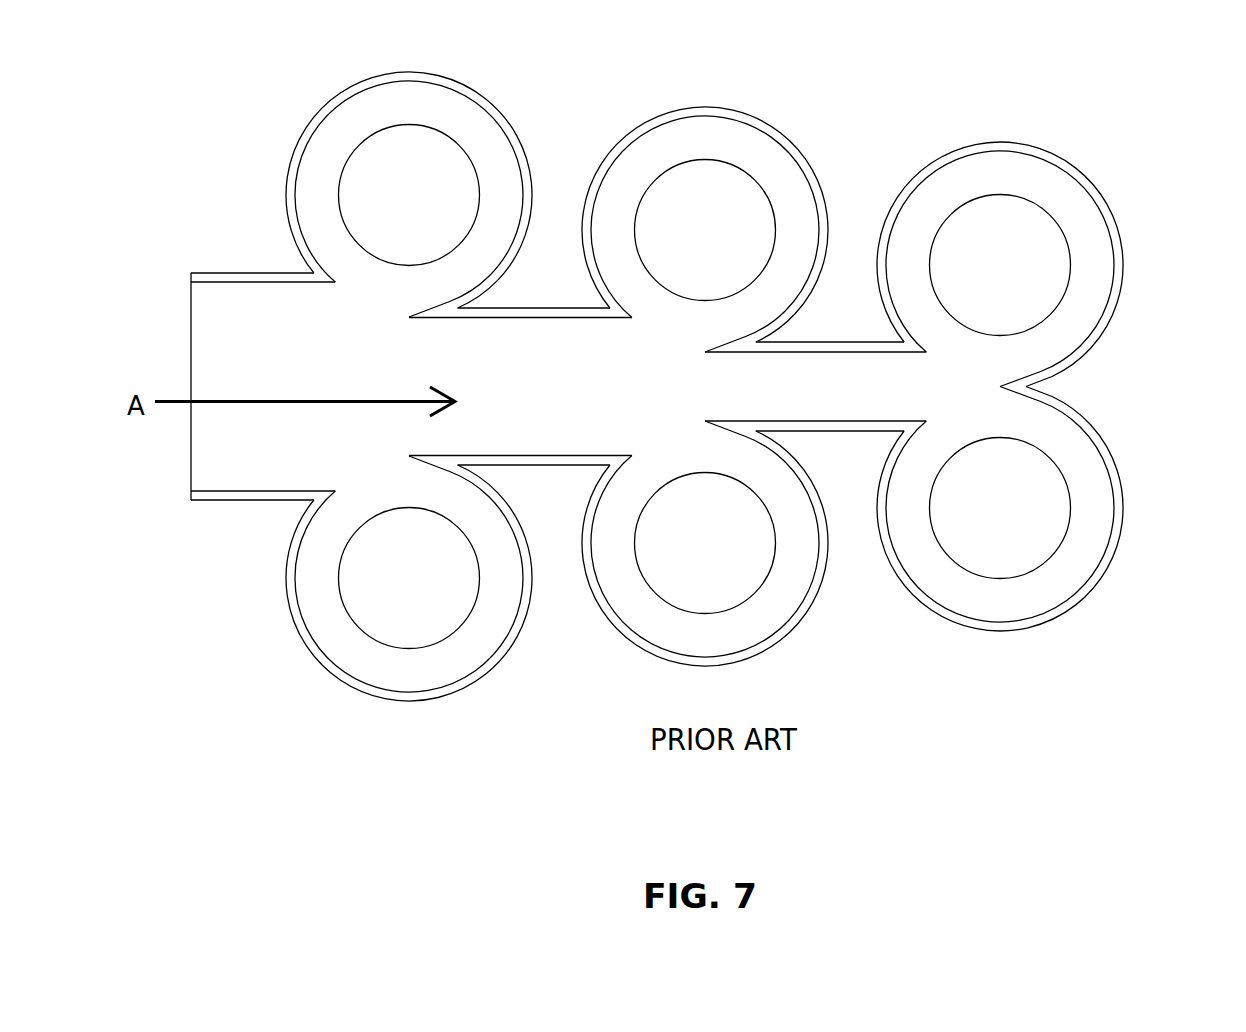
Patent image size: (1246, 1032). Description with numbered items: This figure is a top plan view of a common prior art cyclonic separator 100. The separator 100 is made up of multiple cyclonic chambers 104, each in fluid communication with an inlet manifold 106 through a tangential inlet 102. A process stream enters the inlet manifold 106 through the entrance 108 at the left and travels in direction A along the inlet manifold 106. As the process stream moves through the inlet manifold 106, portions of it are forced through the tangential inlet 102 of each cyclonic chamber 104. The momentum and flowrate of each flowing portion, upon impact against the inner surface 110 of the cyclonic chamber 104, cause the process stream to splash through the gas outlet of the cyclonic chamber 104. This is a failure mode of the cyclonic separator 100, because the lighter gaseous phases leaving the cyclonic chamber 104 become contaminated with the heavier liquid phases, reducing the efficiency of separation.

The cyclonic separator 100 is at (232, 183).
The tangential inlet 102 is at (950, 362).
The cyclonic chamber 104 is at (1075, 548).
The inlet manifold 106 is at (228, 500).
The entrance 108 is at (191, 331).
The inner surface 110 is at (622, 138).